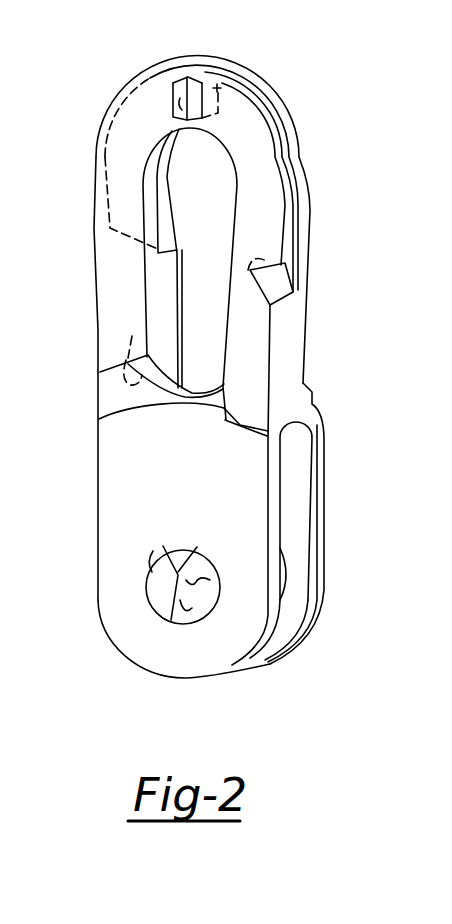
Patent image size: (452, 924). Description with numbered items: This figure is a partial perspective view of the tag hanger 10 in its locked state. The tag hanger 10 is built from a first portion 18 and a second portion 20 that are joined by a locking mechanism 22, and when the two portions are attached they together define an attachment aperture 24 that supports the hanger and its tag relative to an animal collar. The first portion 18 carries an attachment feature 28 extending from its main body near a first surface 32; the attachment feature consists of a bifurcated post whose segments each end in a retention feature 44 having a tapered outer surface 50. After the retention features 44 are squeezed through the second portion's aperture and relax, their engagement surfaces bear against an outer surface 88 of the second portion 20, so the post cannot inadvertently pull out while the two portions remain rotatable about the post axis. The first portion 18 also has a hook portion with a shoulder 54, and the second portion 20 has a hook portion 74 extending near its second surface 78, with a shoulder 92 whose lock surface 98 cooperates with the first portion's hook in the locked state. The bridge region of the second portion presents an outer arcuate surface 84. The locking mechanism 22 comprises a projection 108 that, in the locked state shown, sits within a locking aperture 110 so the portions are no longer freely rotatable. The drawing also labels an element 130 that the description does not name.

The tag hanger 10 is at (338, 250).
The first portion 18 is at (335, 415).
The second portion 20 is at (105, 506).
The locking mechanism 22 is at (168, 86).
The attachment aperture 24 is at (202, 210).
The attachment feature 28 is at (143, 595).
The first surface 32 is at (294, 490).
The retention feature 44 is at (190, 617).
The tapered outer surface 50 is at (148, 556).
The shoulder 54 is at (163, 278).
The hook portion 74 is at (285, 104).
The second surface 78 is at (128, 344).
The outer arcuate surface 84 is at (132, 397).
The outer surface 88 is at (152, 488).
The shoulder 92 is at (262, 343).
The lock surface 98 is at (290, 264).
The projection 108 is at (222, 92).
The locking aperture 110 is at (174, 114).
The inner arch 130 is at (225, 135).